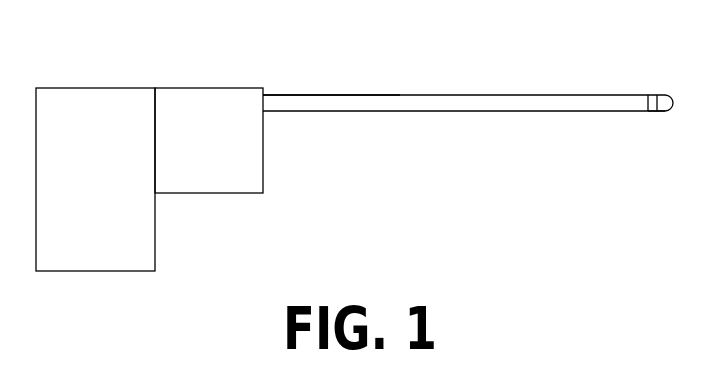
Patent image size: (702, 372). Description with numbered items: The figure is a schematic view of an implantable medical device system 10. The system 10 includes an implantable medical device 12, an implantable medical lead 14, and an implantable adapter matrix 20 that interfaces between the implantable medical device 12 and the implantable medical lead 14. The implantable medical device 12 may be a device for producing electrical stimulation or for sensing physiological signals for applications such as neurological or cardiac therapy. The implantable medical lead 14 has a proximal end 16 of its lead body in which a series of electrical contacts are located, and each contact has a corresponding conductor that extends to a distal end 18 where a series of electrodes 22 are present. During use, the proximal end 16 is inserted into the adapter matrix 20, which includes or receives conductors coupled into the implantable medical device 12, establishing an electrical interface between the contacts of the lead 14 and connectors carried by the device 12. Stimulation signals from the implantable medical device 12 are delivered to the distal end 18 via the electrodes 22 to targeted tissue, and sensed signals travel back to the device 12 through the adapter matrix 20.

The implantable medical device system 10 is at (262, 58).
The implantable medical device 12 is at (95, 271).
The implantable medical lead 14 is at (457, 111).
The proximal end 16 is at (290, 95).
The distal end 18 is at (640, 100).
The implantable adapter matrix 20 is at (212, 193).
The electrodes 22 is at (655, 120).